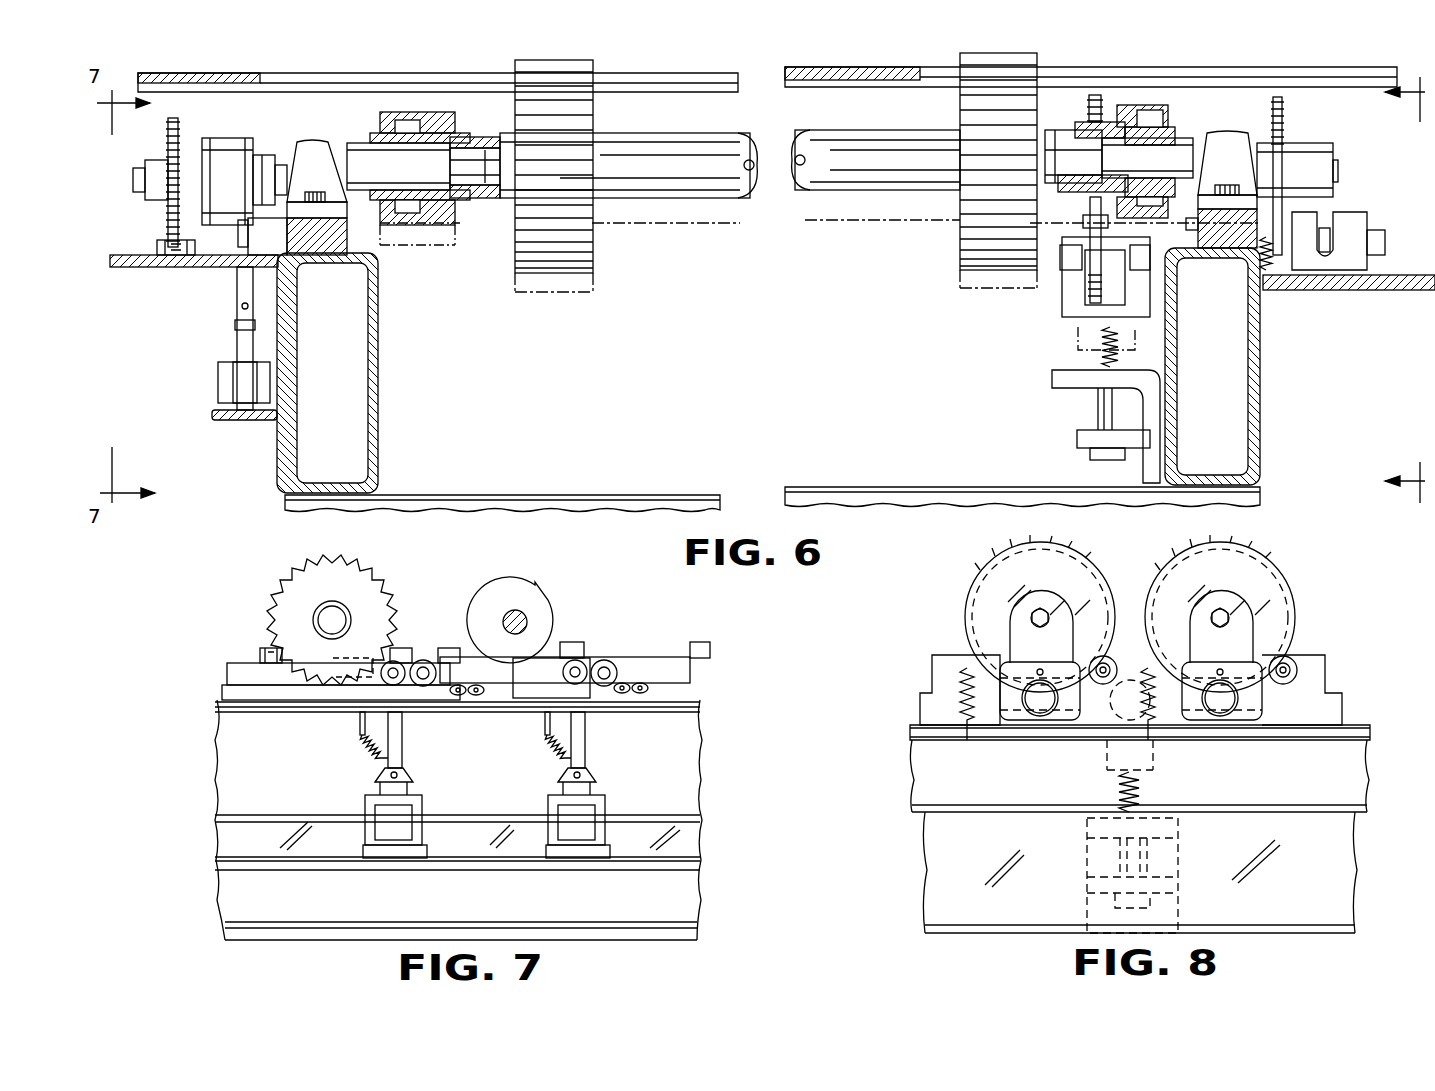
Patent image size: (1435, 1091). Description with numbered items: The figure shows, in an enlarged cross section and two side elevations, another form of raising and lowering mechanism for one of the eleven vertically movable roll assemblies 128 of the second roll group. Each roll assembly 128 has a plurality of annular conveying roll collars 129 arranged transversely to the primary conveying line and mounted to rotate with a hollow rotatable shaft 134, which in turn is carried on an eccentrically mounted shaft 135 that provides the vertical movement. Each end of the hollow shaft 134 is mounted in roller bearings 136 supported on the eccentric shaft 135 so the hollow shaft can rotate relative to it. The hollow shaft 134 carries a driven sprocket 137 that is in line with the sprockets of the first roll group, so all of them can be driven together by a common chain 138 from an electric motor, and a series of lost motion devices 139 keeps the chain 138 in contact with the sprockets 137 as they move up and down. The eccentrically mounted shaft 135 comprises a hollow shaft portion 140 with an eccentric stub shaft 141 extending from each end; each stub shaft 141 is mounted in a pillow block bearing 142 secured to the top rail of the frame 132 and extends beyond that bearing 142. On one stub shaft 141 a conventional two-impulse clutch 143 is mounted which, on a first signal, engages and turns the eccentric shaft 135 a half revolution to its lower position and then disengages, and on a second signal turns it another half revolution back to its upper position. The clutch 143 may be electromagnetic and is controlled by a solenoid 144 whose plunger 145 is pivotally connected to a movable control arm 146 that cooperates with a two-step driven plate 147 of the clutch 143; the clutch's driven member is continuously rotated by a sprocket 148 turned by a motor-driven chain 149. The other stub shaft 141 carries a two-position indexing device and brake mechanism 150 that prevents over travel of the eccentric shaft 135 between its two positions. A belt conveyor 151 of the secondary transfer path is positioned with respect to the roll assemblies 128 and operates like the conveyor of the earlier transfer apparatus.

In FIG. 6, the vertically movable roll assembly 128 is at (680, 210).
In FIG. 6, the annular conveying roll collar 129 is at (525, 260).
In FIG. 6, the frame 132 is at (378, 402).
In FIG. 7, the frame 132 is at (683, 855).
In FIG. 8, the frame 132 is at (930, 862).
In FIG. 6, the hollow rotatable shaft 134 is at (463, 136).
In FIG. 6, the eccentrically mounted shaft 135 is at (465, 195).
In FIG. 6, the roller bearing 136 is at (390, 128).
In FIG. 6, the driven sprocket 137 is at (1097, 98).
In FIG. 8, the driven sprocket 137 is at (1160, 560).
In FIG. 6, the chain 138 is at (1082, 232).
In FIG. 6, the lost motion device 139 is at (1060, 342).
In FIG. 8, the lost motion device 139 is at (1095, 760).
In FIG. 6, the hollow shaft portion 140 is at (750, 180).
In FIG. 6, the eccentric stub shaft 141 is at (357, 150).
In FIG. 6, the pillow block bearing 142 is at (303, 150).
In FIG. 6, the two-impulse clutch 143 is at (215, 140).
In FIG. 6, the solenoid 144 is at (210, 380).
In FIG. 7, the solenoid 144 is at (355, 803).
In FIG. 6, the plunger 145 is at (240, 285).
In FIG. 7, the plunger 145 is at (588, 718).
In FIG. 6, the movable control arm 146 is at (275, 228).
In FIG. 7, the movable control arm 146 is at (525, 690).
In FIG. 6, the two-step driven plate 147 is at (258, 142).
In FIG. 7, the two-step driven plate 147 is at (545, 605).
In FIG. 6, the sprocket 148 is at (170, 137).
In FIG. 7, the sprocket 148 is at (300, 593).
In FIG. 6, the chain 149 is at (187, 258).
In FIG. 7, the chain 149 is at (630, 684).
In FIG. 6, the two-position indexing device and brake mechanism 150 is at (1312, 165).
In FIG. 8, the two-position indexing device and brake mechanism 150 is at (1305, 595).
In FIG. 6, the belt conveyor 151 is at (845, 63).